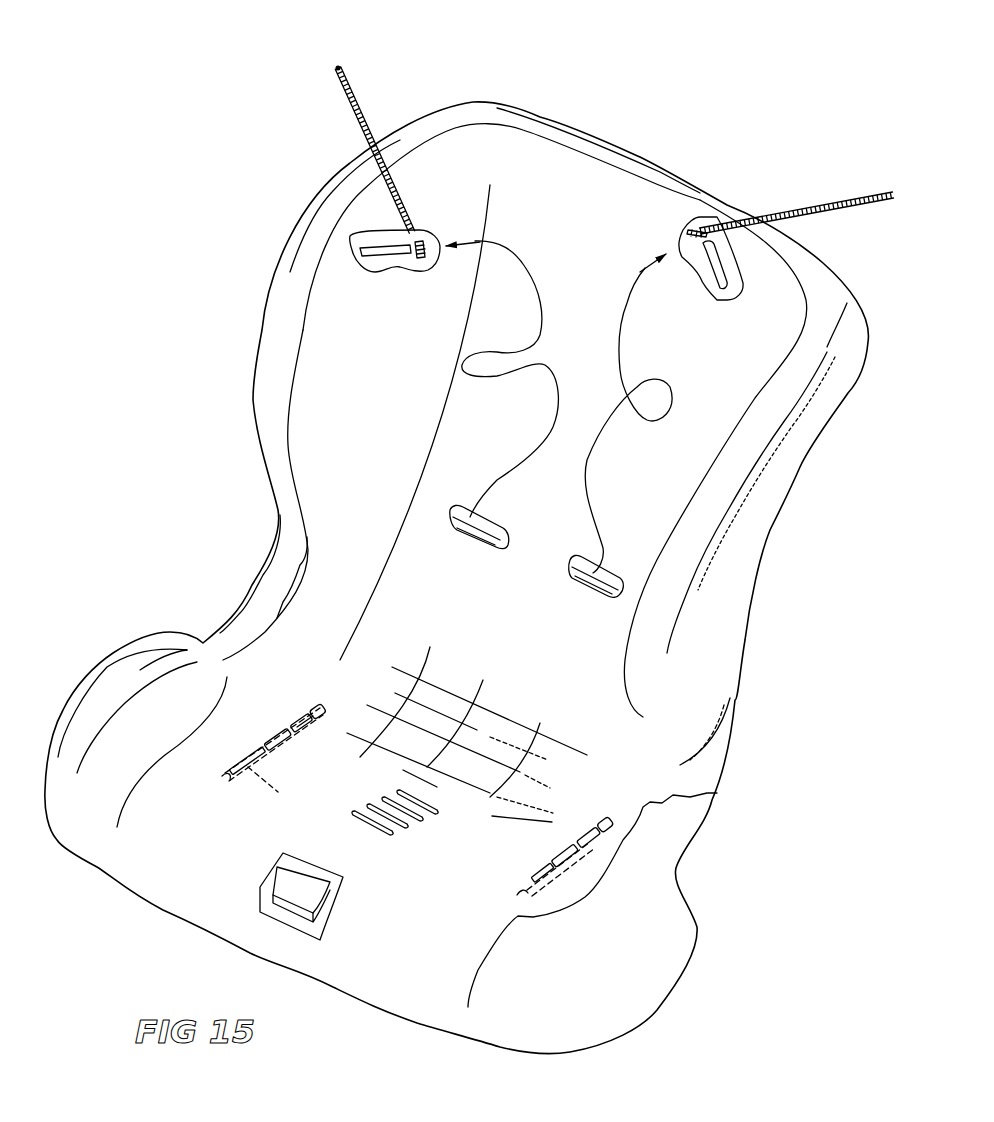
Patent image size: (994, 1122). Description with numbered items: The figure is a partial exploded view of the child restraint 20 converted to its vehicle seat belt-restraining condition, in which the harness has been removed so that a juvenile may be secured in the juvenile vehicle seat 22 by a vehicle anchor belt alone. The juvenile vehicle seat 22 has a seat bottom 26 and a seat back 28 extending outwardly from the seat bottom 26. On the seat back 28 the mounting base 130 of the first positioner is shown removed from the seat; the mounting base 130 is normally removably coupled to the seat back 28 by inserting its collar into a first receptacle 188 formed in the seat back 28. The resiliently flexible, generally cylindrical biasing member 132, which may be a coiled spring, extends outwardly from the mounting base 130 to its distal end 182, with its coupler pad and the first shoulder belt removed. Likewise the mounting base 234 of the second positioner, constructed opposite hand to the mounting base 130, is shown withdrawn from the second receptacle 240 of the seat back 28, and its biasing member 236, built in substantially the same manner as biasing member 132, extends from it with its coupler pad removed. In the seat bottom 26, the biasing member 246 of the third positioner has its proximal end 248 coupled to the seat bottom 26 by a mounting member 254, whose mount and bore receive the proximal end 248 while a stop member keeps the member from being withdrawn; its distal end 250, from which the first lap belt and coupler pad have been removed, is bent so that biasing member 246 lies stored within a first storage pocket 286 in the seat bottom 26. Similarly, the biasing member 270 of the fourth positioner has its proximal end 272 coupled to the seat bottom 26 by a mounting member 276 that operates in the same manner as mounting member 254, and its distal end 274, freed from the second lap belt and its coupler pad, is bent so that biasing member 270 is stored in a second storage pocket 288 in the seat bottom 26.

The child restraint 20 is at (723, 110).
The juvenile vehicle seat 22 is at (597, 125).
The seat bottom 26 is at (157, 805).
The seat back 28 is at (660, 503).
The mounting base 130 is at (407, 285).
The biasing member 132 is at (355, 121).
The distal end 182 is at (338, 66).
The first receptacle 188 is at (472, 532).
The mounting base 234 is at (730, 316).
The biasing member 236 is at (818, 202).
The second receptacle 240 is at (597, 585).
The biasing member 246 is at (284, 789).
The proximal end 248 is at (318, 703).
The distal end 250 is at (227, 779).
The mounting member 254 is at (330, 713).
The biasing member 270 is at (527, 890).
The proximal end 272 is at (598, 824).
The distal end 274 is at (517, 895).
The mounting member 276 is at (627, 832).
The first storage pocket 286 is at (312, 727).
The second storage pocket 288 is at (552, 878).